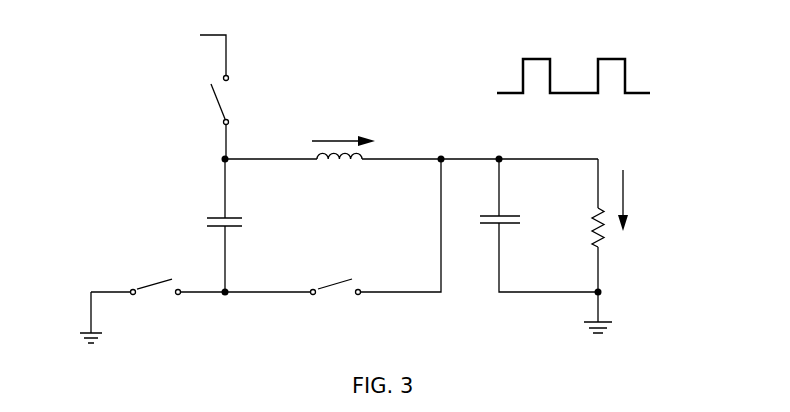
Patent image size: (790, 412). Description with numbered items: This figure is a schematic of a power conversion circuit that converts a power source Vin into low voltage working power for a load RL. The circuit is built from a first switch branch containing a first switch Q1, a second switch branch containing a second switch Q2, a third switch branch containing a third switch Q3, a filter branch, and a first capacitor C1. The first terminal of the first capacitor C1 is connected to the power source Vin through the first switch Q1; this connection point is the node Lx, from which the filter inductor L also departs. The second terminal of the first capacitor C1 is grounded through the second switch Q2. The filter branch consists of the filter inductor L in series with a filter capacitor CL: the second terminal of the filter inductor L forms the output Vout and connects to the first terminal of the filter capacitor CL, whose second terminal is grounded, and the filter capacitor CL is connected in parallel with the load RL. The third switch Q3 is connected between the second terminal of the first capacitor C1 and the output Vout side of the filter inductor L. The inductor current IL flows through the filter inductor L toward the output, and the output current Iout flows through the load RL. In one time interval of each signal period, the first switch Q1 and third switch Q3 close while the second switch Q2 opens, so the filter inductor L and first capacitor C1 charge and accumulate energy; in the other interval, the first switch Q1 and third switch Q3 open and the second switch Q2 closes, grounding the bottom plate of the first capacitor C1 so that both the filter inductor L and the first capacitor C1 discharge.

The power source Vin is at (192, 49).
The first switch Q1 is at (205, 118).
The switching node Lx is at (239, 148).
The filter inductor L is at (333, 177).
The inductor current IL is at (343, 130).
The first capacitor C1 is at (237, 225).
The second switch Q2 is at (158, 304).
The third switch Q3 is at (293, 304).
The output voltage Vout is at (505, 147).
The filter capacitor CL is at (539, 225).
The load RL is at (582, 225).
The output current Iout is at (641, 200).